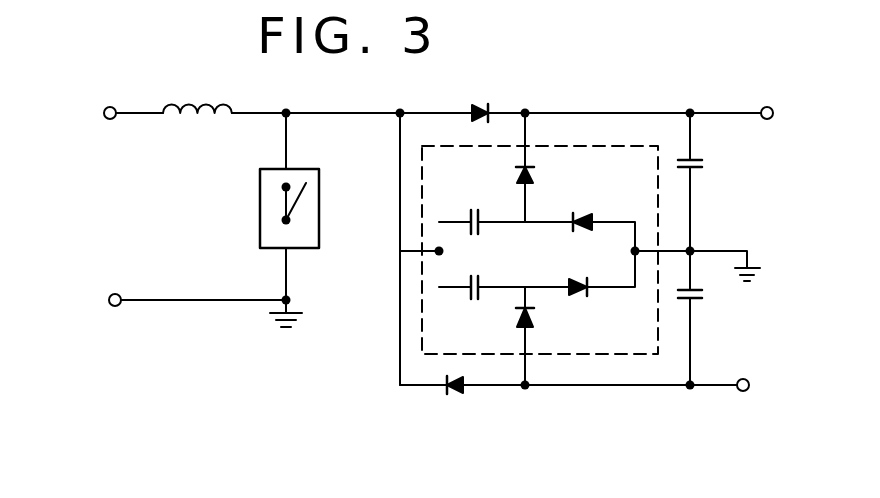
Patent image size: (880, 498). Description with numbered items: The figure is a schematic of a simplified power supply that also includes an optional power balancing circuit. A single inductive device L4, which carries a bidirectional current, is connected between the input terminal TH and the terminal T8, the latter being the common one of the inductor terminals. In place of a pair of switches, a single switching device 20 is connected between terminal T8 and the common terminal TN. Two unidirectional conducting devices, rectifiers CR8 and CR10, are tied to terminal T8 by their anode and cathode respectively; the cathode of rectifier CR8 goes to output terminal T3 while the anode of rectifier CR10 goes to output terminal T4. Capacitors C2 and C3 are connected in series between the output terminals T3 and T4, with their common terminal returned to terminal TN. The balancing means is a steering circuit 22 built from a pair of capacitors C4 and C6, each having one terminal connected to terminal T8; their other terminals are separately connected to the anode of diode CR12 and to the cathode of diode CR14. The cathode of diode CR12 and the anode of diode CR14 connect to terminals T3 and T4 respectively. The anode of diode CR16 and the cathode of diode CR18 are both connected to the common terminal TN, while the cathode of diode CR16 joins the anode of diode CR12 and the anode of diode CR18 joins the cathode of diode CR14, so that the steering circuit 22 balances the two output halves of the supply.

The terminal TH is at (82, 113).
The terminal TN is at (706, 230).
The inductive device L4 is at (222, 98).
The switching device 20 is at (260, 203).
The terminal T8 is at (407, 90).
The rectifier CR8 is at (520, 85).
The steering circuit 22 is at (618, 144).
The capacitor C4 is at (482, 187).
The capacitor C6 is at (477, 306).
The diode CR12 is at (540, 174).
The diode CR14 is at (536, 318).
The diode CR16 is at (569, 214).
The diode CR18 is at (602, 262).
The capacitor C2 is at (705, 165).
The capacitor C3 is at (705, 290).
The output terminal T3 is at (789, 113).
The output terminal T4 is at (764, 385).
The rectifier CR10 is at (458, 400).